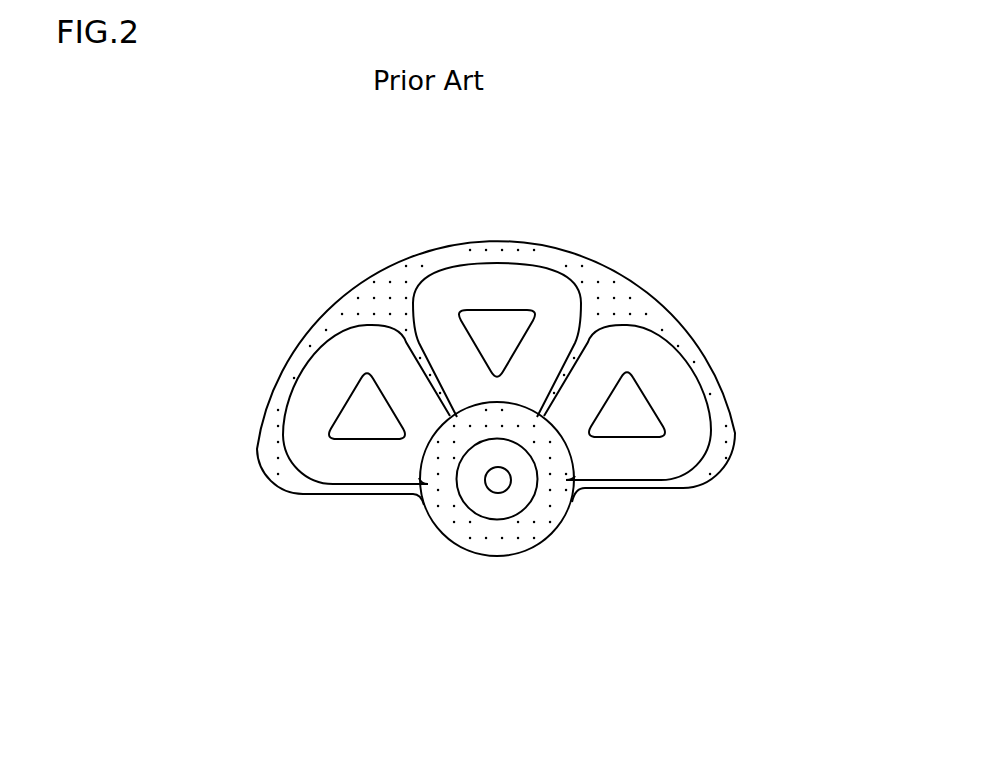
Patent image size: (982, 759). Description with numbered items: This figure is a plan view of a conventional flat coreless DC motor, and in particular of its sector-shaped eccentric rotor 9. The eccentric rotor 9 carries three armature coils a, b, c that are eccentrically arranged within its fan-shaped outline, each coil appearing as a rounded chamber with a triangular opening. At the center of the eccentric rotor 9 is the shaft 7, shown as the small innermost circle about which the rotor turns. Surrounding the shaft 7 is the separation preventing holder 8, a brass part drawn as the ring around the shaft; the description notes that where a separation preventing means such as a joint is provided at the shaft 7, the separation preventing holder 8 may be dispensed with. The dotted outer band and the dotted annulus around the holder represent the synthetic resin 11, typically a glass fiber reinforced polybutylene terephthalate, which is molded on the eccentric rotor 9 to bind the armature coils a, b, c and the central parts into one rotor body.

The eccentric rotor 9 is at (637, 129).
The armature coil a is at (322, 395).
The armature coil b is at (498, 290).
The armature coil c is at (662, 373).
The shaft 7 is at (492, 487).
The separation preventing holder 8 is at (523, 495).
The synthetic resin 11 is at (508, 540).